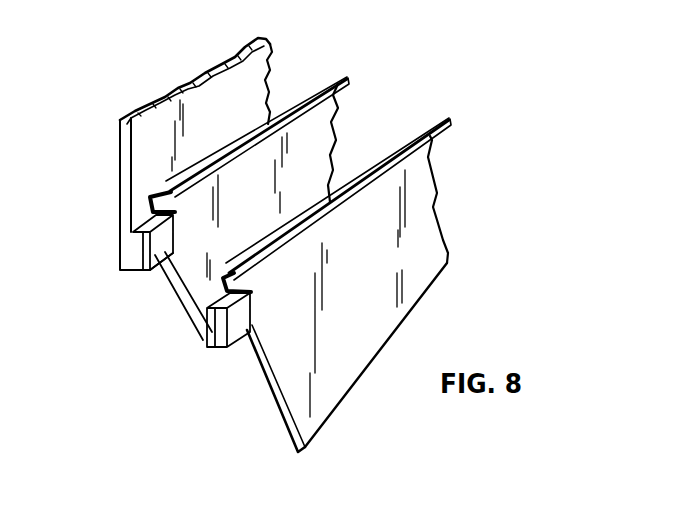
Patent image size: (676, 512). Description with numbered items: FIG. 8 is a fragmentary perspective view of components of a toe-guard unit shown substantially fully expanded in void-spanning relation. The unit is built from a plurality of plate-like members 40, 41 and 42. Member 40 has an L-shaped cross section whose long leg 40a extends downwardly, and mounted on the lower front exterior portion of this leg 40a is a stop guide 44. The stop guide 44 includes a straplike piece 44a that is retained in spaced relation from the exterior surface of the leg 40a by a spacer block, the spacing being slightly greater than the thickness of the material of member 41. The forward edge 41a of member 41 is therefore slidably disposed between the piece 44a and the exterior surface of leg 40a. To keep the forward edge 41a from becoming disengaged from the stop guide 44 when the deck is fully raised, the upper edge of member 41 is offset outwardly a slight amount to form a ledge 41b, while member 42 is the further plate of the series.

The plate-like member 40 is at (282, 63).
The long leg 40a is at (142, 158).
The plate-like member 41 is at (335, 132).
The forward edge 41a is at (184, 318).
The ledge 41b is at (337, 72).
The plate-like member 42 is at (440, 197).
The stop guide 44 is at (118, 258).
The straplike piece 44a is at (157, 262).